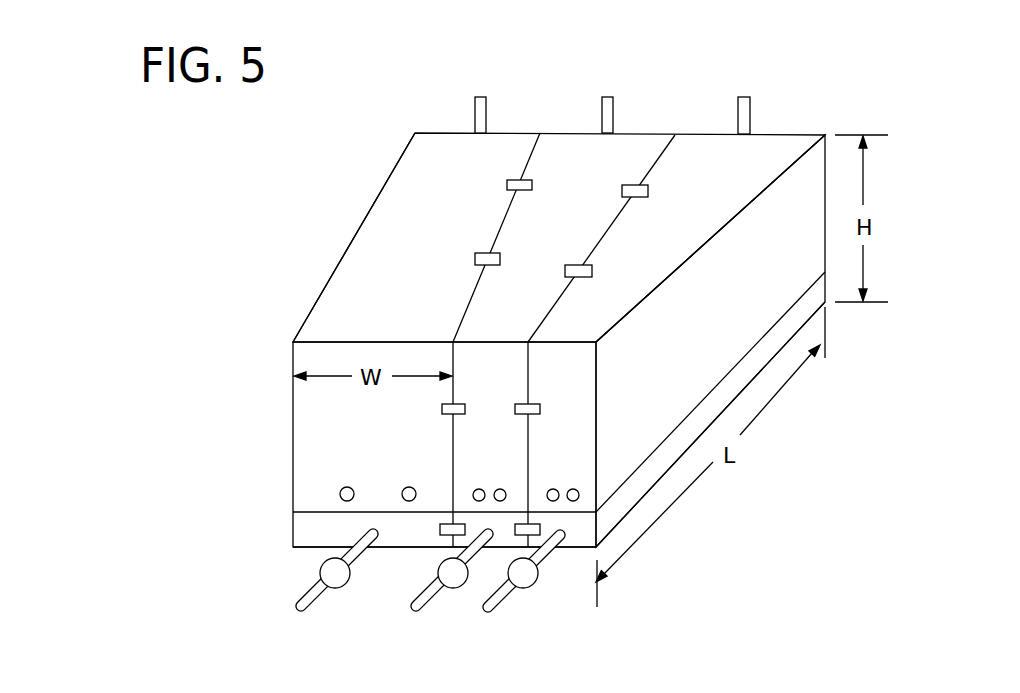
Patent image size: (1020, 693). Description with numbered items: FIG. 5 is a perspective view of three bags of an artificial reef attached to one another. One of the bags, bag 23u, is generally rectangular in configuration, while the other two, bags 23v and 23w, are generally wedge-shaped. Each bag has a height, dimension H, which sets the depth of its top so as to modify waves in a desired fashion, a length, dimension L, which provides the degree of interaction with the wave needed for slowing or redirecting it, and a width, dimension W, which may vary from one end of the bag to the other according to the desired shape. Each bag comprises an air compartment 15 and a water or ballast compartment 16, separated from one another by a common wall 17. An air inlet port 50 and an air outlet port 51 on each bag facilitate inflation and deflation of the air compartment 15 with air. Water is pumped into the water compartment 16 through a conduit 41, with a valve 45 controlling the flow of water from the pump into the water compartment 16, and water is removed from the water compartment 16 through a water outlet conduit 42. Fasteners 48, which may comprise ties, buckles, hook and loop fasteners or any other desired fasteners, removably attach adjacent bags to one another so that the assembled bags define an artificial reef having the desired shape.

The air compartment 15 is at (583, 133).
The water compartment 16 is at (677, 428).
The common wall 17 is at (760, 340).
The bag 23u is at (335, 278).
The bag 23v is at (652, 133).
The bag 23w is at (700, 133).
The conduit 41 is at (295, 607).
The water outlet conduit 42 is at (478, 97).
The valve 45 is at (320, 573).
The fasteners 48 is at (479, 257).
The air inlet port 50 is at (347, 487).
The air outlet port 51 is at (405, 487).